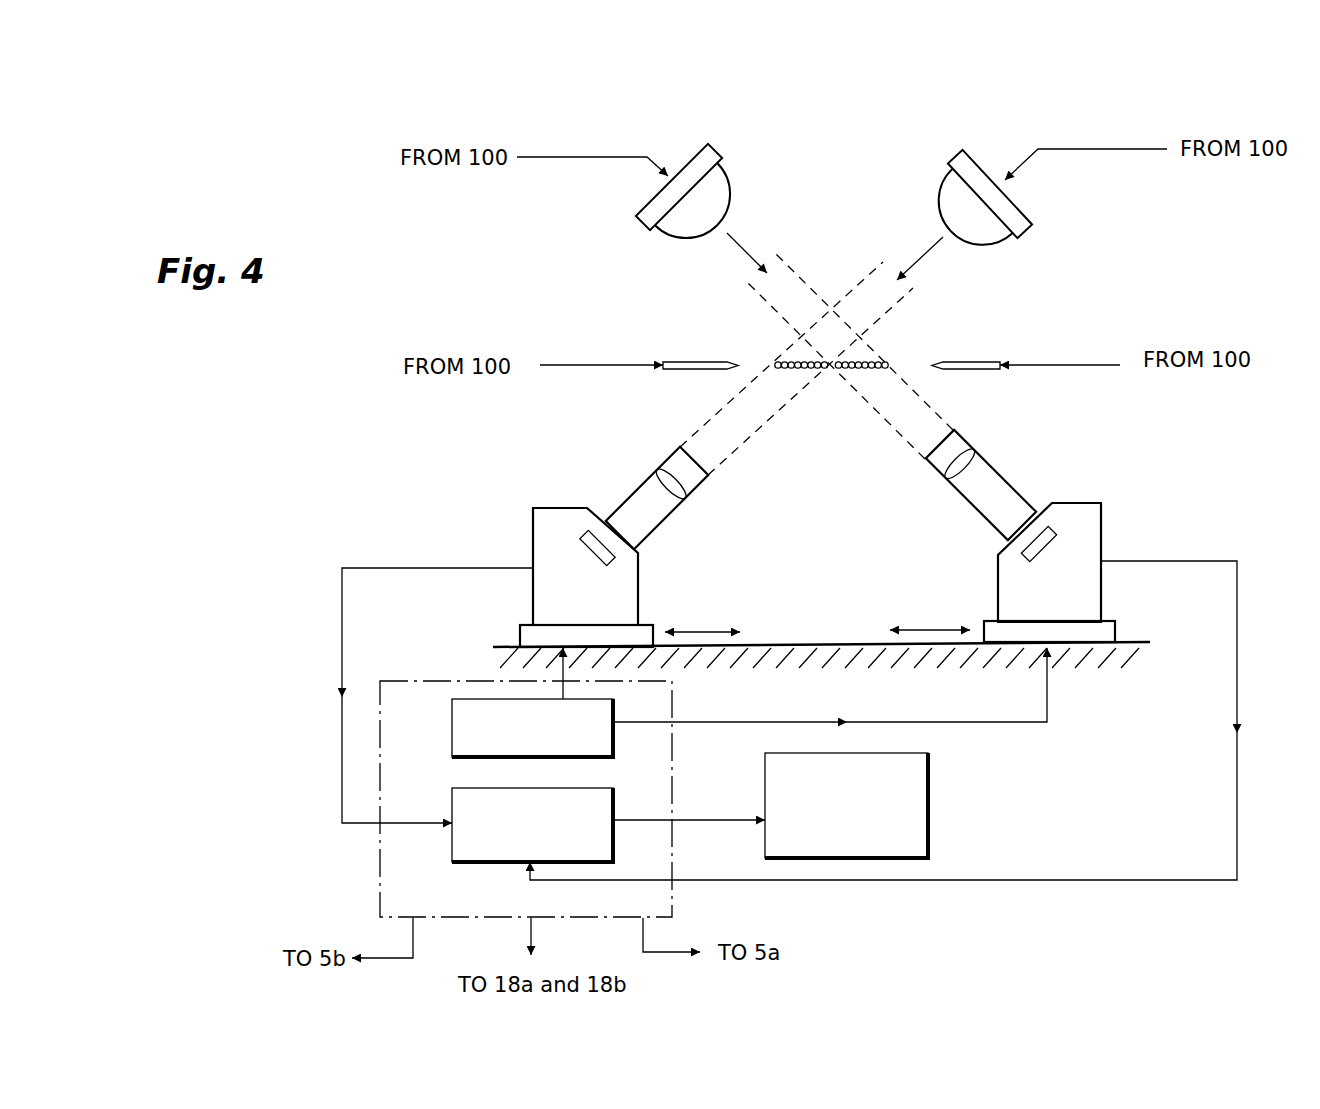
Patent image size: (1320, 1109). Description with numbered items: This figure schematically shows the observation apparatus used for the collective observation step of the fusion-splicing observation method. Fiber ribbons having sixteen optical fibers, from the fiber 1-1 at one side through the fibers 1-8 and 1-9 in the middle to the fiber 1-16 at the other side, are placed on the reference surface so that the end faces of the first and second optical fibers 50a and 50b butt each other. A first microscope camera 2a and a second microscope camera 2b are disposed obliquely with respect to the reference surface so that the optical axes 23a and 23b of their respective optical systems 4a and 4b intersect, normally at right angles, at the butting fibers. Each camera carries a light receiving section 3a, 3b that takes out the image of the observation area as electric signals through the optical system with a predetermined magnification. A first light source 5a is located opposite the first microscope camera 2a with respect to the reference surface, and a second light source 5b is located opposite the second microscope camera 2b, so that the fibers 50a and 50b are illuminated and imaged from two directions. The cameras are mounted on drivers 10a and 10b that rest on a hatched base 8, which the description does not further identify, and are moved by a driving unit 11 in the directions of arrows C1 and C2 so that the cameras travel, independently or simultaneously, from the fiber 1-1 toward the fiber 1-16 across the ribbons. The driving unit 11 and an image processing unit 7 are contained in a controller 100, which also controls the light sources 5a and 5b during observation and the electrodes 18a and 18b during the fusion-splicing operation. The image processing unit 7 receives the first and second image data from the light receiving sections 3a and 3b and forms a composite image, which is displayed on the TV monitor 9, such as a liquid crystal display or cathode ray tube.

The controller 100 is at (477, 800).
The driving unit 11 is at (452, 742).
The image processing unit 7 is at (452, 806).
The TV monitor 9 is at (928, 796).
The base / guide surface 8 is at (816, 644).
The first microscope camera 2a is at (640, 592).
The second microscope camera 2b is at (1103, 546).
The light receiving section 3a is at (582, 534).
The light receiving section 3b is at (1050, 530).
The optical system 4a is at (665, 475).
The optical system 4b is at (945, 470).
The first light source 5a is at (1022, 206).
The second light source 5b is at (650, 210).
The driver 10a is at (528, 633).
The driver 10b is at (1108, 633).
The electrode 18a is at (676, 362).
The electrode 18b is at (988, 367).
The optical axis 23a is at (868, 292).
The optical axis 23b is at (787, 275).
The first optical fiber 50a is at (874, 381).
The second optical fiber 50b is at (874, 381).
The optical fiber 1-1 is at (775, 362).
The optical fiber 1-8 is at (826, 369).
The optical fiber 1-9 is at (838, 369).
The optical fiber 1-16 is at (889, 367).
The arrow C1 is at (699, 631).
The arrow C2 is at (931, 629).